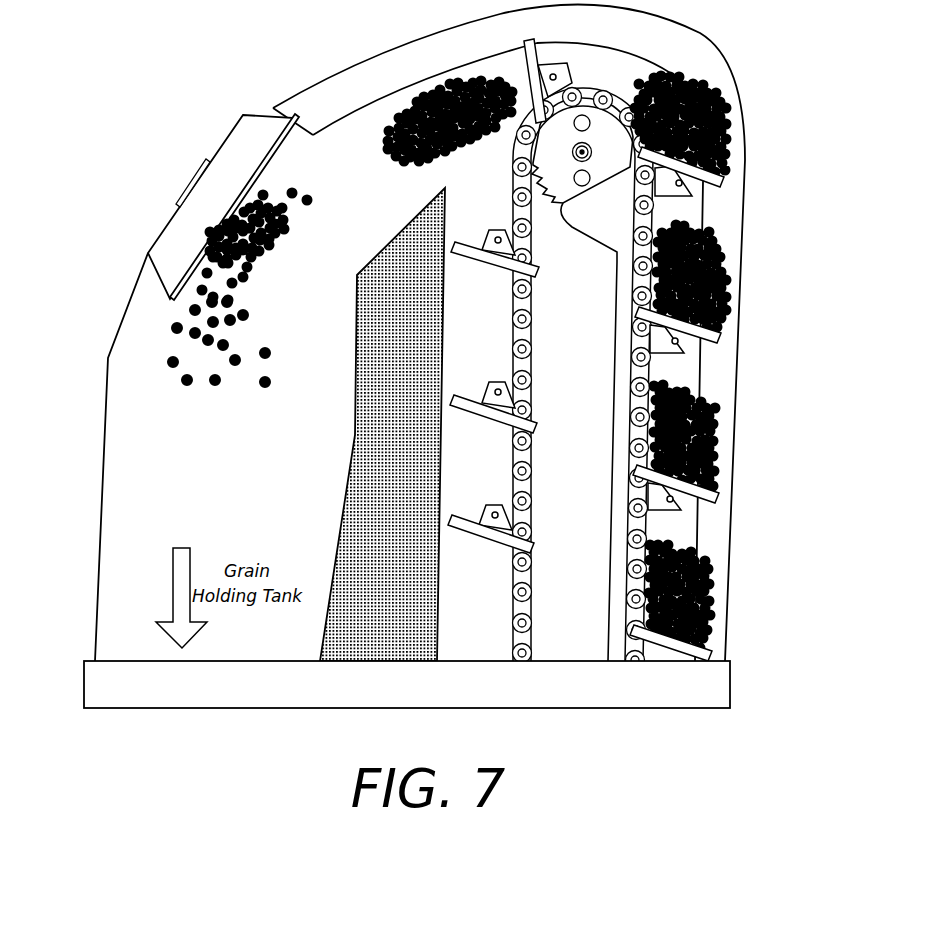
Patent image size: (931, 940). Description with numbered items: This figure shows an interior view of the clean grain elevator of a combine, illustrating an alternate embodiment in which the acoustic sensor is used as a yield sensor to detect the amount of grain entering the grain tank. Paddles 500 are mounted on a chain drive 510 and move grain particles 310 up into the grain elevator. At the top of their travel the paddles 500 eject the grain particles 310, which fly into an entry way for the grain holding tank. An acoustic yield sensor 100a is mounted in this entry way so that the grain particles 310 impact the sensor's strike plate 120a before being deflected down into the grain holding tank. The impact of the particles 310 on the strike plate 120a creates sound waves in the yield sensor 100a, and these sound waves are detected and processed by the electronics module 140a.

The acoustic yield sensor 100a is at (288, 83).
The electronics module 140a is at (180, 196).
The strike plate 120a is at (272, 167).
The grain particles 310 is at (260, 385).
The paddles 500 is at (533, 544).
The chain drive 510 is at (531, 607).